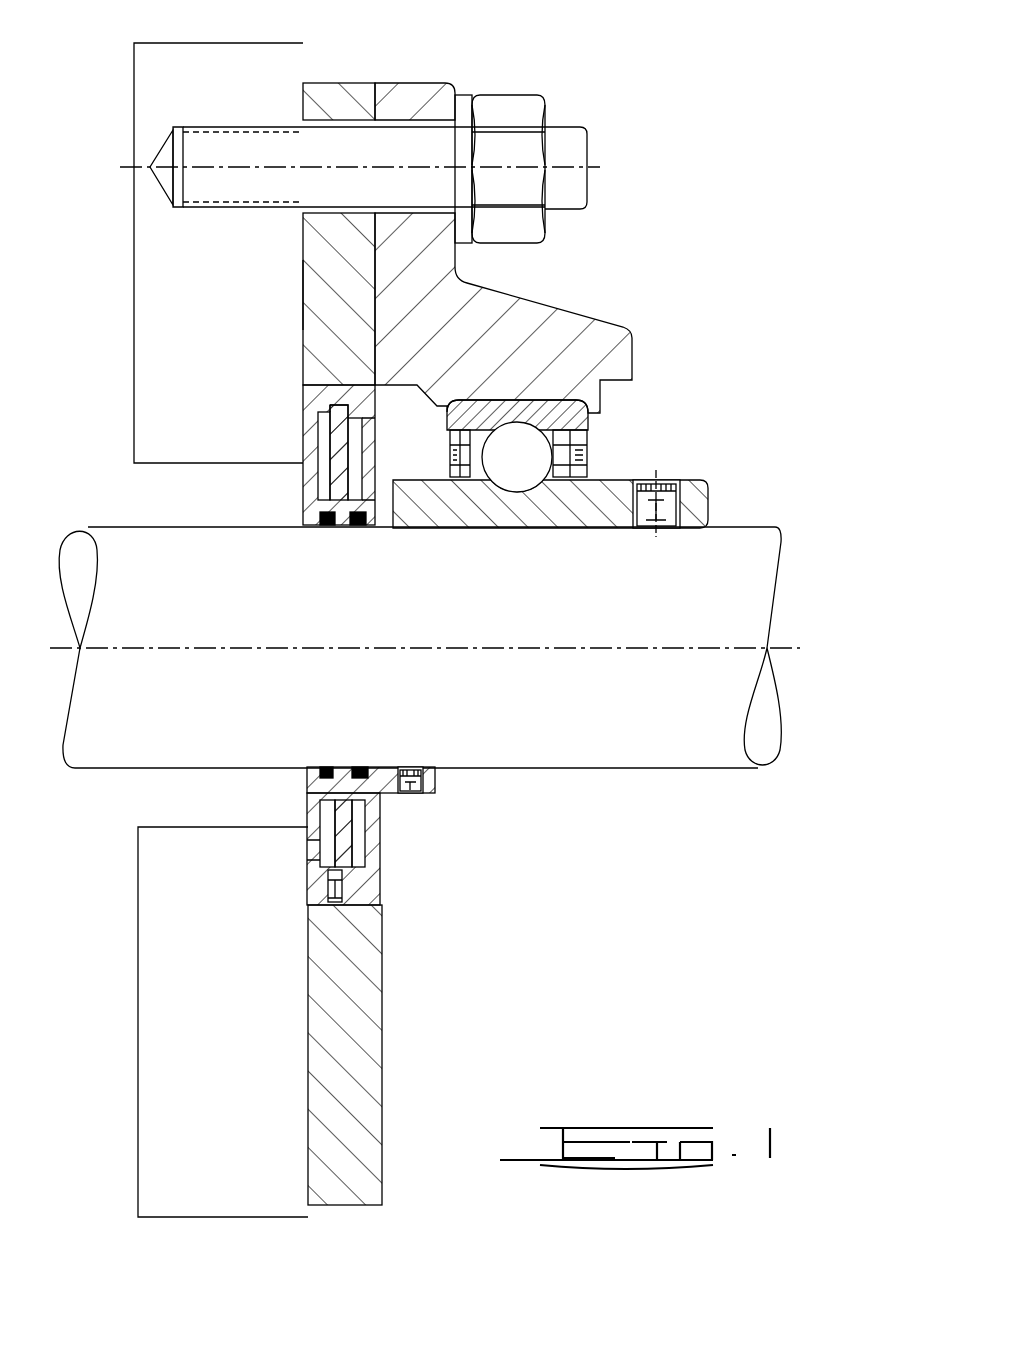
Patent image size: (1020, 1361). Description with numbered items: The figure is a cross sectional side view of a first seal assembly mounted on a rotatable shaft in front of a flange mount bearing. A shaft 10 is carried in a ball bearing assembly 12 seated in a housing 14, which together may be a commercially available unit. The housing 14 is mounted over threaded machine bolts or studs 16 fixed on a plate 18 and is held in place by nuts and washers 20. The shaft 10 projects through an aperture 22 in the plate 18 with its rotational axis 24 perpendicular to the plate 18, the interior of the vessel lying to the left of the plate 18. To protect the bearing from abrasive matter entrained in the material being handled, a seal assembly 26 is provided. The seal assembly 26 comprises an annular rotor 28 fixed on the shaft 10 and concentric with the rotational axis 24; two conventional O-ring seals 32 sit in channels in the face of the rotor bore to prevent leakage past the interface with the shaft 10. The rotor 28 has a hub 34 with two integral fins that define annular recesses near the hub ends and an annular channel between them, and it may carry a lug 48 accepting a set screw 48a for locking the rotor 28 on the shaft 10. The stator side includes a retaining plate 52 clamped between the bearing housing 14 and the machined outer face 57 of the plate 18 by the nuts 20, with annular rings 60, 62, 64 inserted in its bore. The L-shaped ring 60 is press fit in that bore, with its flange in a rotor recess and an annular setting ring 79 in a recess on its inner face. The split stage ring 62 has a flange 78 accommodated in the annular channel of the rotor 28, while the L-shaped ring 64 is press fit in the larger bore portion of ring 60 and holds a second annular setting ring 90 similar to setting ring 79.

The shaft 10 is at (708, 527).
The ball bearing assembly 12 is at (530, 480).
The housing 14 is at (403, 93).
The threaded machine bolts or studs 16 is at (570, 160).
The plate 18 is at (289, 58).
The nuts and washers 20 is at (505, 112).
The aperture 22 is at (170, 827).
The rotational axis 24 is at (767, 648).
The seal assembly 26 is at (368, 900).
The rotor 28 is at (303, 510).
The O-ring seals 32 is at (325, 527).
The hub 34 is at (355, 530).
The lug 48 is at (380, 767).
The set screw 48a is at (410, 767).
The retaining plate 52 is at (325, 98).
The machined outer face 57 is at (303, 302).
The ring 60 is at (307, 863).
The stage ring 62 is at (303, 421).
The ring 64 is at (370, 878).
The flange 78 is at (345, 767).
The annular setting ring 79 is at (307, 800).
The second annular setting ring 90 is at (365, 527).